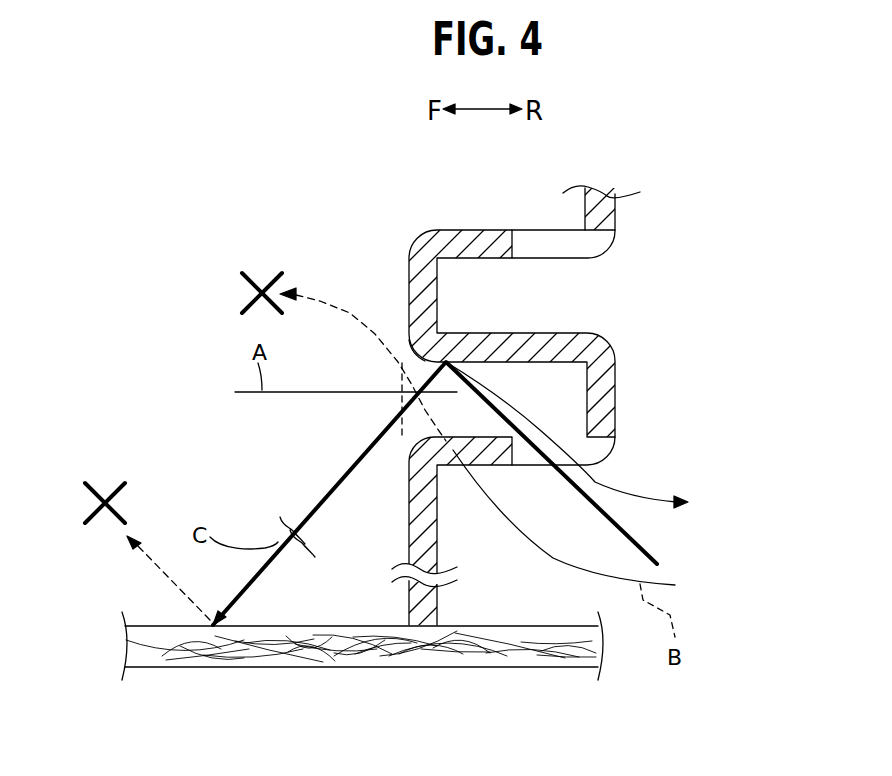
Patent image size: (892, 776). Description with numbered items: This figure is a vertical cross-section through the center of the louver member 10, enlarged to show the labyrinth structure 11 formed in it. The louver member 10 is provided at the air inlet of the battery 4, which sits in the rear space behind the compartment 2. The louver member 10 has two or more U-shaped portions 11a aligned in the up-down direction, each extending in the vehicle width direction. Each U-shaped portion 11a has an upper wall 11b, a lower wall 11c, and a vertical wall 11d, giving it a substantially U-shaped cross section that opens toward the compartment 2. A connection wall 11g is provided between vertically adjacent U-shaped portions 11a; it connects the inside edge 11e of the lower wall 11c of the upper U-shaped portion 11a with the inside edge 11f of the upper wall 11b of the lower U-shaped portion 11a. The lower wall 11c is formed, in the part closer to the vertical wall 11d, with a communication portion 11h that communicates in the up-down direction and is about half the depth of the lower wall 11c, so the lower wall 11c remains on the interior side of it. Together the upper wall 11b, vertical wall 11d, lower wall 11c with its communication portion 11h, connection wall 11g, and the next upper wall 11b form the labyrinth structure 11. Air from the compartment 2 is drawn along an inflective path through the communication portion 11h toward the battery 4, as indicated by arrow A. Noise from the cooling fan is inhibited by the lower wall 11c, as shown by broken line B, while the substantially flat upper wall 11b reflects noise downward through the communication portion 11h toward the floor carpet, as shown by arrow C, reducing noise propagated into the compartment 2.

The compartment 2 is at (161, 347).
The battery 4 is at (792, 347).
The louver member 10 is at (378, 243).
The labyrinth structure 11 is at (645, 343).
The U-shaped portion 11a is at (402, 405).
The upper wall 11b is at (547, 333).
The lower wall 11c is at (486, 488).
The vertical wall 11d is at (617, 397).
The inside edge of lower wall 11e is at (412, 242).
The inside edge of upper wall 11f is at (408, 345).
The connection wall 11g is at (408, 298).
The communication portion 11h is at (597, 451).